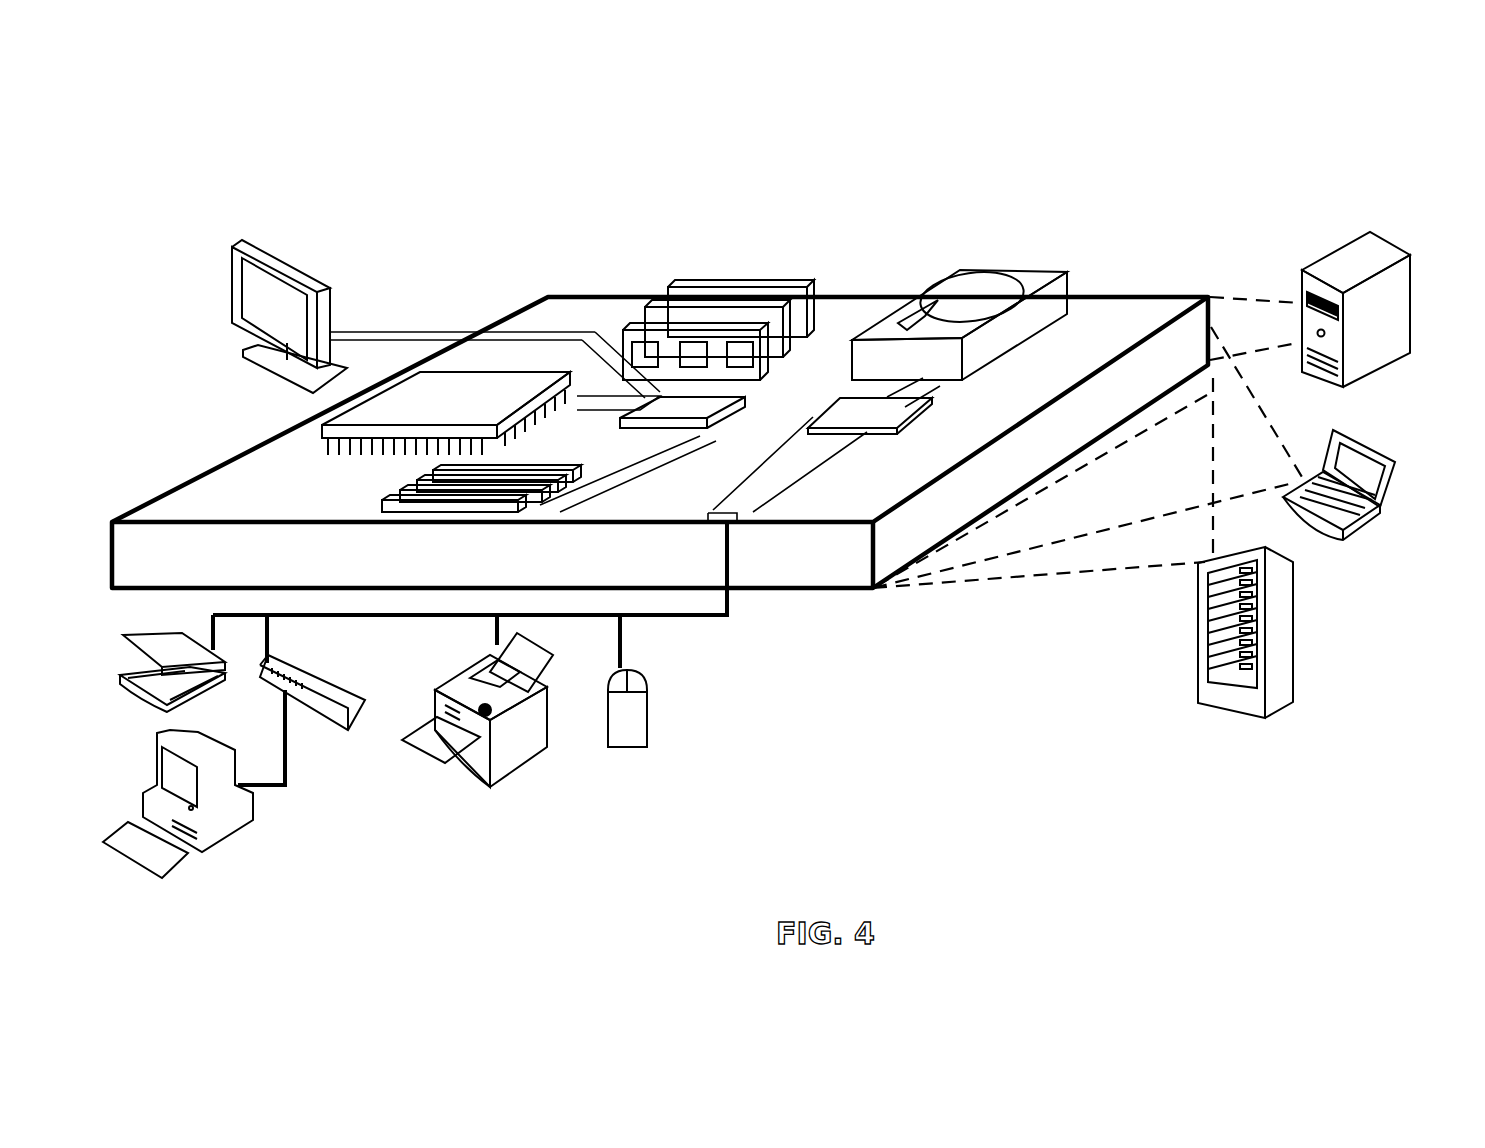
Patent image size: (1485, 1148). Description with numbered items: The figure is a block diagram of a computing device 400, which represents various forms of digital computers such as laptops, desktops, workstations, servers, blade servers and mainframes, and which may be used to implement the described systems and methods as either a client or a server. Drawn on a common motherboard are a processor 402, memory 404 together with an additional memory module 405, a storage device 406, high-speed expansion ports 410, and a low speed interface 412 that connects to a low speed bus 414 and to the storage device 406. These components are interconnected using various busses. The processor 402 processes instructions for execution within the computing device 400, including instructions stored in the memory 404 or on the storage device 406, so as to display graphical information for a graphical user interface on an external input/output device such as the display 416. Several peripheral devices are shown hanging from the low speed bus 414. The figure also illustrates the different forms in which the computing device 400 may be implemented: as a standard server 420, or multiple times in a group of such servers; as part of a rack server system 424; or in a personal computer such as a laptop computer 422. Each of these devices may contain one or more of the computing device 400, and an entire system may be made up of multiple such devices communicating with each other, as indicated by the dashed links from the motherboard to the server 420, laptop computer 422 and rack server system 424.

The computing device 400 is at (1396, 107).
The processor 402 is at (318, 437).
The memory 404 is at (703, 287).
The memory module 405 is at (668, 290).
The storage device 406 is at (963, 270).
The high-speed expansion ports 410 is at (403, 482).
The low speed interface 412 is at (857, 417).
The low speed bus 414 is at (733, 522).
The display 416 is at (248, 238).
The standard server 420 is at (1320, 260).
The laptop computer 422 is at (1347, 532).
The rack server system 424 is at (1198, 672).